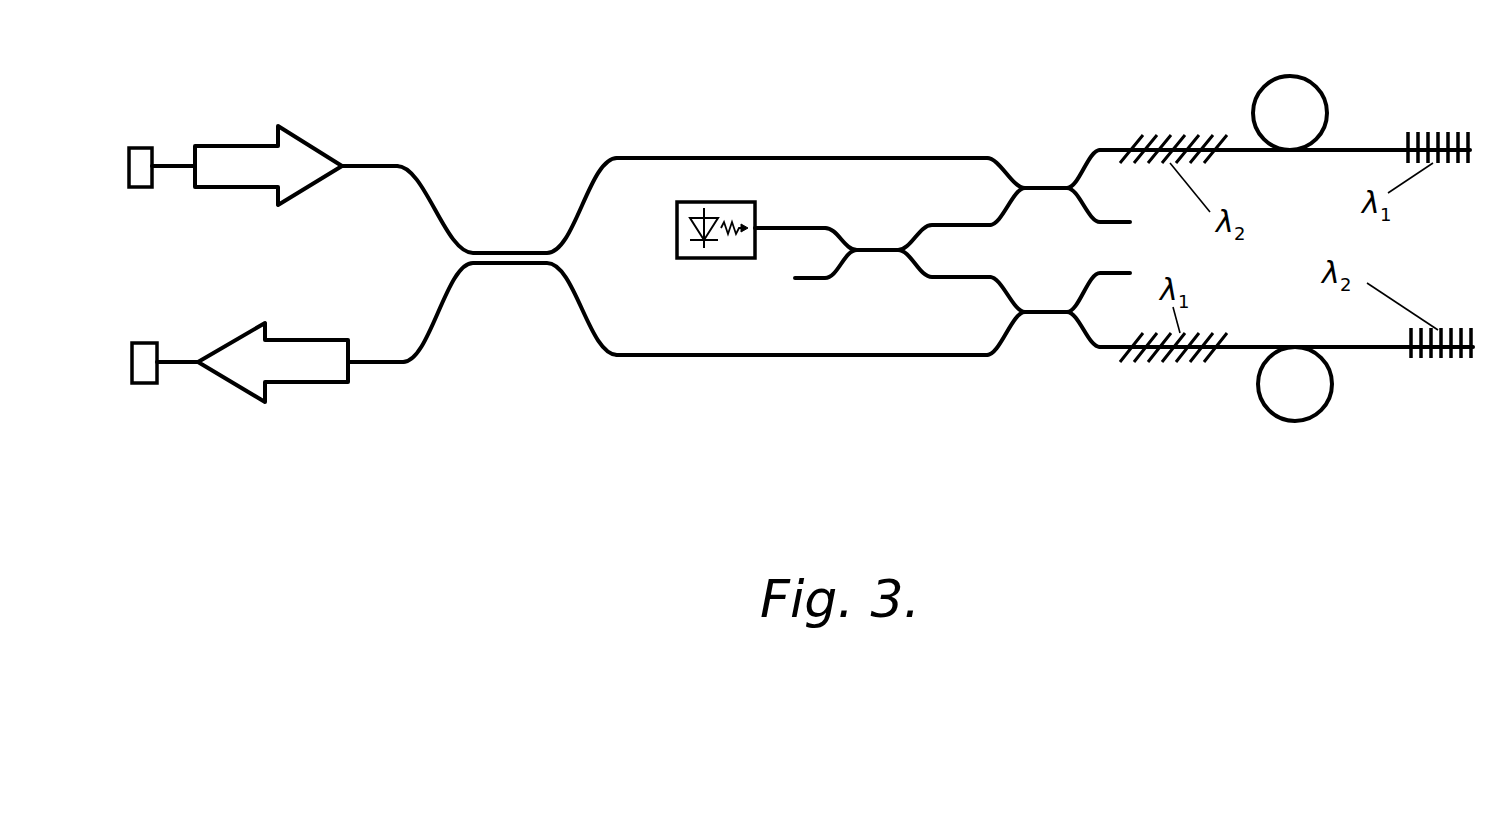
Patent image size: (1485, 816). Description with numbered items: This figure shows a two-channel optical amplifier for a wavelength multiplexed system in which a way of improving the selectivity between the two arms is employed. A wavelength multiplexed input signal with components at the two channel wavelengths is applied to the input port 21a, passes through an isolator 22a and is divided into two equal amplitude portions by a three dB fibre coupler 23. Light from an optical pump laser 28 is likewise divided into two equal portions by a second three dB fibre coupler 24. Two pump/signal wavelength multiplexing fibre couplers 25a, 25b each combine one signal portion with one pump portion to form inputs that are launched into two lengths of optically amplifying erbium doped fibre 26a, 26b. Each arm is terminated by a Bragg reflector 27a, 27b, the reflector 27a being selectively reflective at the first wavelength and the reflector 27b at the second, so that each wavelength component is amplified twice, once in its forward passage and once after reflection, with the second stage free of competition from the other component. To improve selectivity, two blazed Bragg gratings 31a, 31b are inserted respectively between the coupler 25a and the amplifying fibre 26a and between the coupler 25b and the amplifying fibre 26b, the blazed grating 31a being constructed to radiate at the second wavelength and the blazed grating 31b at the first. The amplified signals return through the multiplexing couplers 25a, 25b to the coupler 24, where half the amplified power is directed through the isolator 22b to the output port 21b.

The input port 21a is at (142, 160).
The output port 21b is at (142, 375).
The isolator 22a is at (237, 162).
The isolator 22b is at (273, 365).
The 3 dB fibre coupler 23 is at (497, 242).
The 3 dB fibre coupler 24 is at (880, 263).
The wavelength multiplexing fibre coupler 25a is at (1037, 173).
The wavelength multiplexing fibre coupler 25b is at (1047, 325).
The erbium doped amplifying fibre 26a is at (1290, 78).
The erbium doped amplifying fibre 26b is at (1278, 413).
The Bragg reflector 27a is at (1448, 133).
The Bragg reflector 27b is at (1447, 357).
The optical pump laser 28 is at (727, 212).
The blazed Bragg grating 31a is at (1172, 137).
The blazed Bragg grating 31b is at (1142, 358).